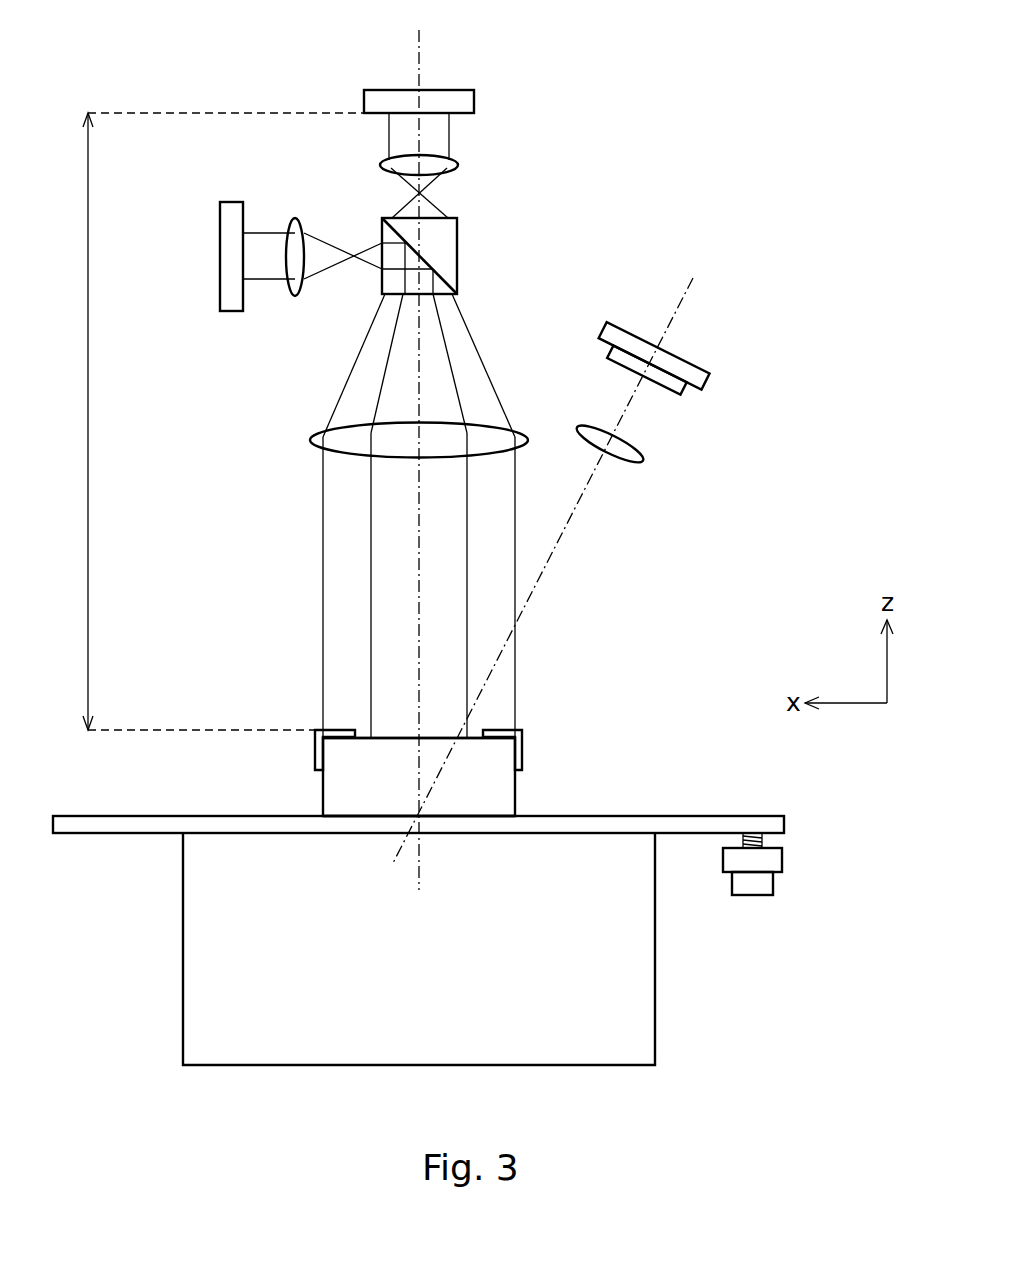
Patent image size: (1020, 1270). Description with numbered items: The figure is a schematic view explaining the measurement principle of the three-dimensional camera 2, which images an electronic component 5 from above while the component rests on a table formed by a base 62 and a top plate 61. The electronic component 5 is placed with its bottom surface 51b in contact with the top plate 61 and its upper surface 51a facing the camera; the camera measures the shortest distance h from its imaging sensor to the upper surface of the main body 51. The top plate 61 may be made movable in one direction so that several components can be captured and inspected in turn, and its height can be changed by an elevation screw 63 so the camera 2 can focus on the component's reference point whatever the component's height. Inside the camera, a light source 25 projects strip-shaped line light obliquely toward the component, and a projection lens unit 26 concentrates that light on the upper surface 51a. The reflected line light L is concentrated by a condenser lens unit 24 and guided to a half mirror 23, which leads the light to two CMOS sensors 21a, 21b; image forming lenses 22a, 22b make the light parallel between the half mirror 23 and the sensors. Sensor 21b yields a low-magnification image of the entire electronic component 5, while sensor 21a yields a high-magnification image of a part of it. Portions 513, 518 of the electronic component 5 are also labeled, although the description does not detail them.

The 3D camera 2 is at (643, 147).
The CMOS sensor 21a is at (447, 90).
The CMOS sensor 21b is at (220, 234).
The image forming lens 22a is at (457, 158).
The image forming lens 22b is at (295, 217).
The half mirror 23 is at (458, 240).
The condenser lens unit 24 is at (316, 438).
The light source 25 is at (707, 384).
The projection lens unit 26 is at (642, 462).
The laser beam L is at (420, 542).
The distance h is at (215, 421).
The electronic component 5 is at (360, 756).
The main body 51 is at (517, 795).
The upper surface 51a is at (392, 738).
The bottom surface 51b is at (373, 816).
The right holding member 513 is at (503, 731).
The left holding member 518 is at (335, 730).
The top plate 61 is at (697, 816).
The base 62 is at (656, 1018).
The elevation screw 63 is at (782, 858).